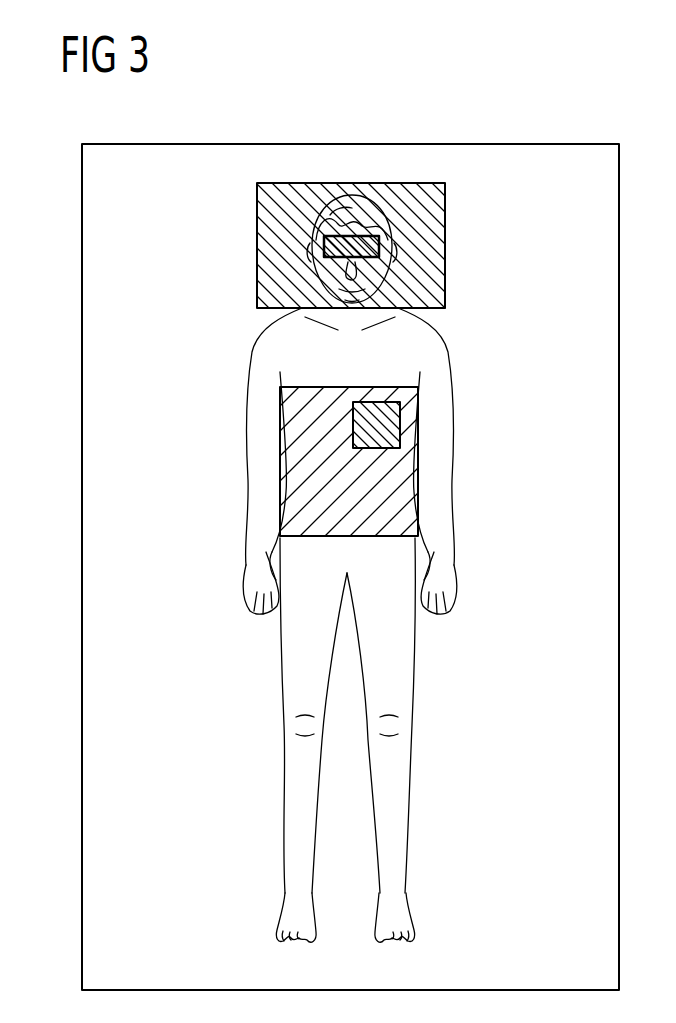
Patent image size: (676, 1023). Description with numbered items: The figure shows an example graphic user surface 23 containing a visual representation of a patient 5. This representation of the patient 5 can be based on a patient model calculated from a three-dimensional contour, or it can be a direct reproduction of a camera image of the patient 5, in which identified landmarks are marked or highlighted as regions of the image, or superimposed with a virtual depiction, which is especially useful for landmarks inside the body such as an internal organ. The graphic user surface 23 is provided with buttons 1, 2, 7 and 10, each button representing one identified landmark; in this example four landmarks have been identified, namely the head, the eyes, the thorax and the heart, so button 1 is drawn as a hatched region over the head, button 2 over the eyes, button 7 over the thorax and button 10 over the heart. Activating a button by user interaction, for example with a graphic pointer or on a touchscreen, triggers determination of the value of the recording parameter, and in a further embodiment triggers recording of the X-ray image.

The button 1 is at (427, 245).
The button 2 is at (348, 230).
The patient 5 is at (397, 680).
The button 7 is at (383, 470).
The button 10 is at (387, 422).
The graphic user surface 23 is at (538, 143).